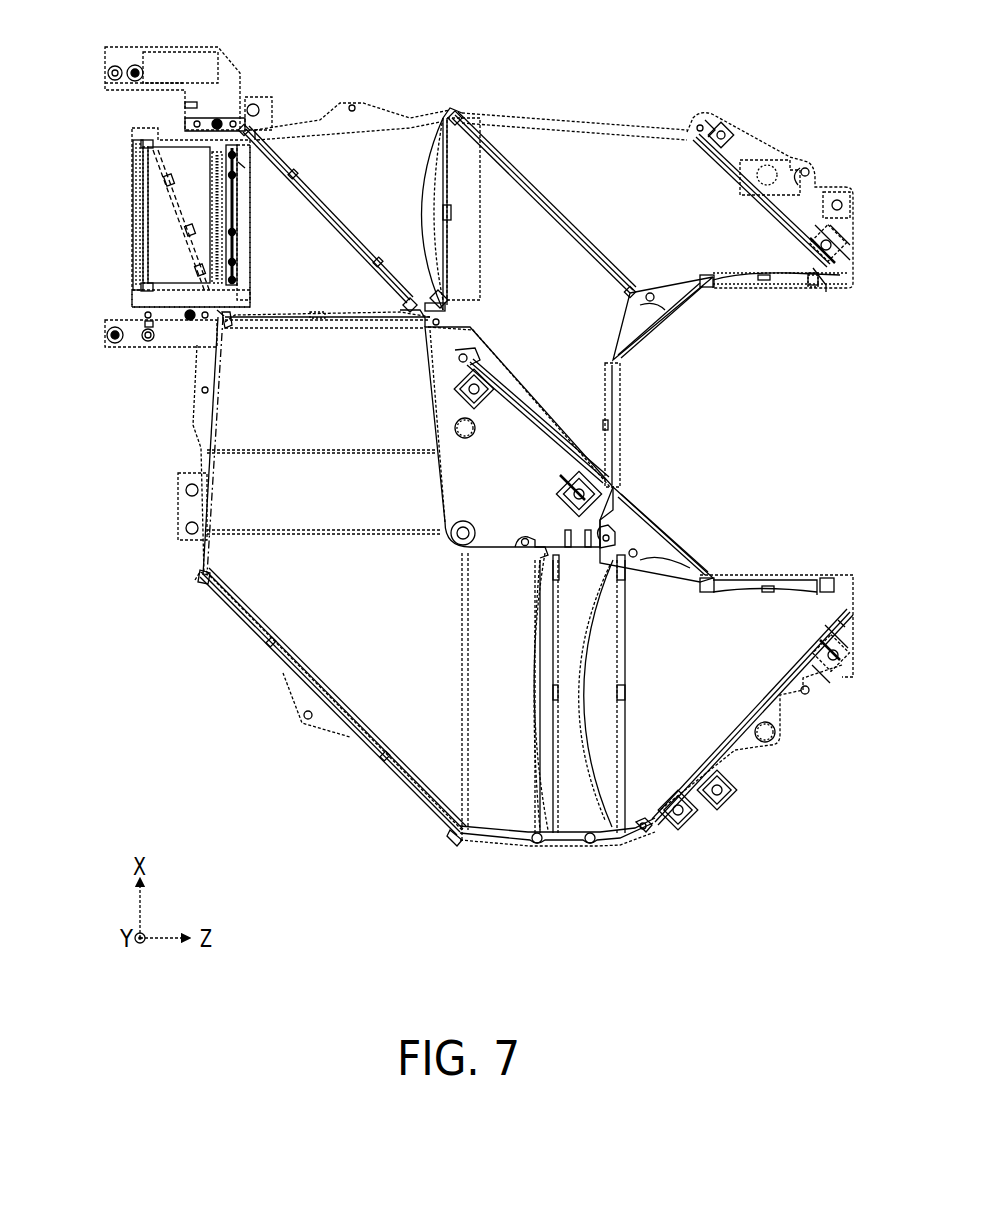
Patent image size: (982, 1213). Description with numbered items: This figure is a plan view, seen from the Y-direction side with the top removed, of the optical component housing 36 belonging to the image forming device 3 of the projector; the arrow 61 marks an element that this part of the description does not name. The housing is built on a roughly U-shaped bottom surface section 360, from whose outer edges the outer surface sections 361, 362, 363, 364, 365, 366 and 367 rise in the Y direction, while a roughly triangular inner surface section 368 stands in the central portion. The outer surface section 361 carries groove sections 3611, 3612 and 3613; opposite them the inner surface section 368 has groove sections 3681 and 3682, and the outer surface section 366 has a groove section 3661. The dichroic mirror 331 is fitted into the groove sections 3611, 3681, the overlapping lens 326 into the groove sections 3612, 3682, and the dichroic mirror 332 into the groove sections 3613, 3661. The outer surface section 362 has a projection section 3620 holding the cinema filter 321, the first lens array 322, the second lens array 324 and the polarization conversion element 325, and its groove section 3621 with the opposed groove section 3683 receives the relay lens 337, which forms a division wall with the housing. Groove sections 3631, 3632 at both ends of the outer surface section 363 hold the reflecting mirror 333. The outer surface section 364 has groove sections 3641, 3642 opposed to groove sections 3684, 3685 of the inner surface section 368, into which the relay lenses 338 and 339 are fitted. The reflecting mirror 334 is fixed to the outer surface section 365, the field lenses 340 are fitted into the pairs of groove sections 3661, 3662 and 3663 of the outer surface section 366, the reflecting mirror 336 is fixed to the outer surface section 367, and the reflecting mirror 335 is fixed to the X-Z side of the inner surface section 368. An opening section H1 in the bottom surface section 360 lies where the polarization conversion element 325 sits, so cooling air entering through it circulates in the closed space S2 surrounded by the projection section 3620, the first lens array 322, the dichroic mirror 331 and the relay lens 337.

The optical unit 61 is at (318, 78).
The image forming device 3 is at (132, 150).
The first lens array 322 is at (133, 190).
The cinema filter 321 is at (140, 228).
The polarization conversion element 325 is at (235, 215).
The second lens array 324 is at (222, 255).
The projection section 3620 is at (132, 314).
The opening section H1 is at (245, 162).
The closed space S2 is at (218, 316).
The groove section 3611 is at (257, 102).
The outer surface section 361 is at (598, 127).
The groove section 3612 is at (446, 112).
The groove section 3613 is at (482, 113).
The overlapping lens 326 is at (420, 132).
The dichroic mirror 331 is at (322, 215).
The dichroic mirror 332 is at (540, 200).
The optical component housing 36 is at (740, 115).
The outer surface section 367 is at (814, 174).
The reflecting mirror 336 is at (745, 207).
The outer surface section 366 is at (820, 290).
The field lens 340 is at (765, 290).
The groove section 3661 is at (628, 291).
The groove section 3663 is at (703, 290).
The groove section 3662 is at (612, 492).
The groove section 3685 is at (608, 535).
The inner surface section 368 is at (468, 340).
The groove section 3681 is at (445, 297).
The groove section 3682 is at (450, 312).
The groove section 3683 is at (418, 330).
The relay lens 337 is at (330, 330).
The groove section 3621 is at (232, 332).
The reflecting mirror 335 is at (550, 422).
The groove section 3684 is at (540, 546).
The outer surface section 362 is at (203, 552).
The groove section 3631 is at (195, 582).
The bottom surface section 360 is at (235, 597).
The reflecting mirror 333 is at (406, 776).
The outer surface section 363 is at (270, 660).
The groove section 3632 is at (455, 846).
The outer surface section 364 is at (497, 846).
The groove section 3641 is at (547, 846).
The groove section 3642 is at (602, 846).
The relay lens 338 is at (538, 732).
The relay lens 339 is at (592, 624).
The reflecting mirror 334 is at (735, 726).
The outer surface section 365 is at (731, 760).